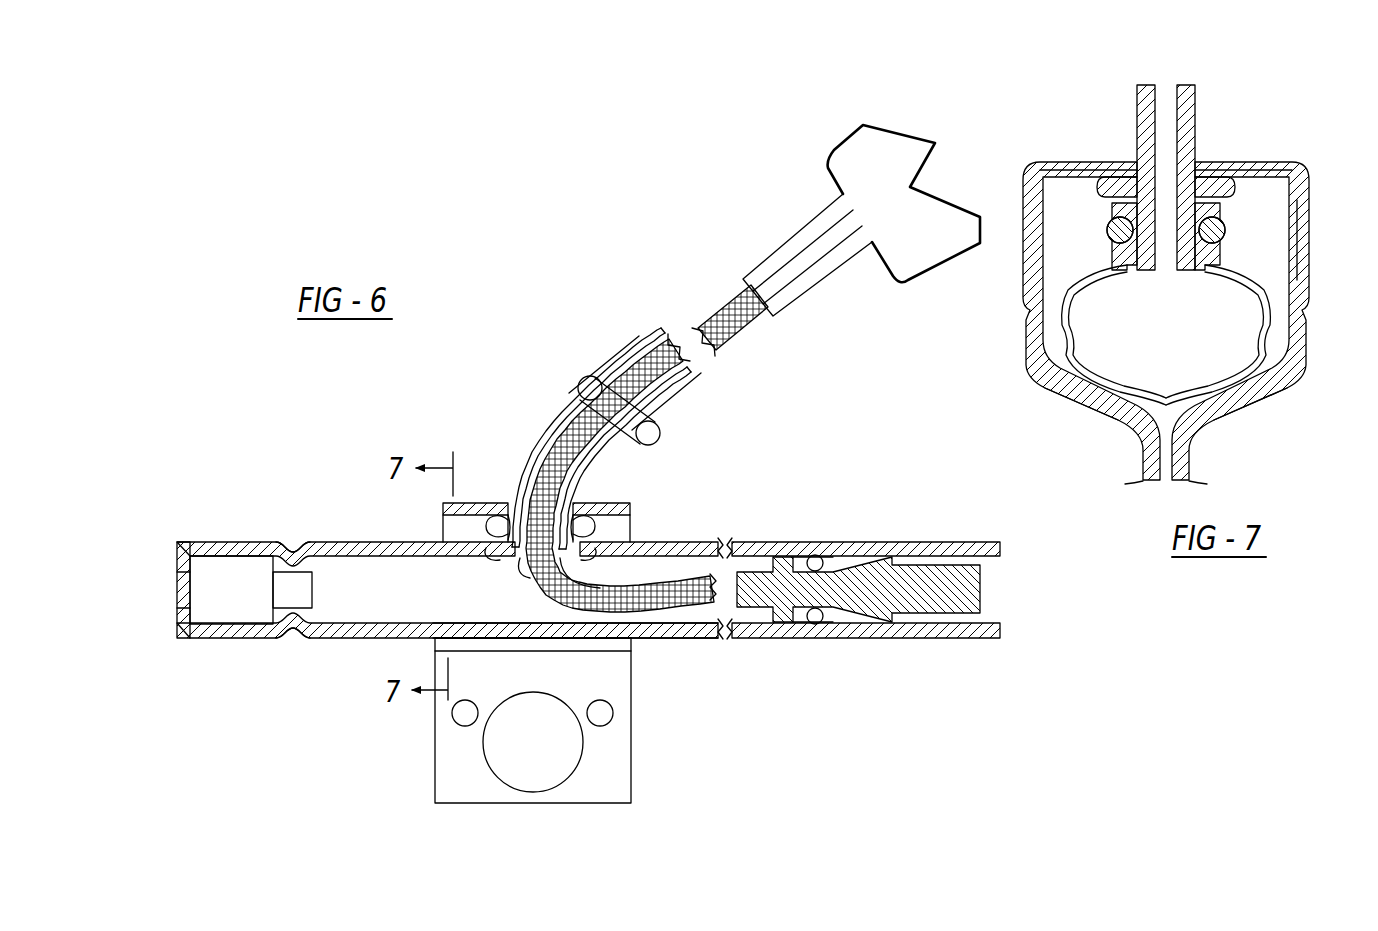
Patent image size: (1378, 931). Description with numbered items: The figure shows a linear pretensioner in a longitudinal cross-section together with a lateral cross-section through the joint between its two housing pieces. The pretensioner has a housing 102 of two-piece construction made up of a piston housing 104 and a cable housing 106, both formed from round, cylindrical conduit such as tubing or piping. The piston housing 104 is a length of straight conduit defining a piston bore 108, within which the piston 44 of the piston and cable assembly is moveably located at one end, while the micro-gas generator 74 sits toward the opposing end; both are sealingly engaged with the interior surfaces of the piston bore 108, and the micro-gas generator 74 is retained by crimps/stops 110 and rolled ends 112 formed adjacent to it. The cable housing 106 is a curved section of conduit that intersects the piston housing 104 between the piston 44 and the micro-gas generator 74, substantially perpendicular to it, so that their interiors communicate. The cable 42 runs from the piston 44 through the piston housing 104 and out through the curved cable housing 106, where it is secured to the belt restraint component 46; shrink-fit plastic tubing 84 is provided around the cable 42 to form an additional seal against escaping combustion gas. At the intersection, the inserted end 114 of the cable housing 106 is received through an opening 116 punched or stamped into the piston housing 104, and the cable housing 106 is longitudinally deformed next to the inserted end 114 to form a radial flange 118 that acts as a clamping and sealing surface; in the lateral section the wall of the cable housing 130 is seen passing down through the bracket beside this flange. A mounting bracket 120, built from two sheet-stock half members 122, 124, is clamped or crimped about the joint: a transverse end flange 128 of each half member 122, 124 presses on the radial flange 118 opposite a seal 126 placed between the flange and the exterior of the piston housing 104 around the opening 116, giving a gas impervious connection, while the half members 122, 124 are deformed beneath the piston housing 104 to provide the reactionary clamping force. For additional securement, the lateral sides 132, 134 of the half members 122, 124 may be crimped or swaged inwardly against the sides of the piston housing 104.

In FIG. 6, the cable 42 is at (712, 323).
In FIG. 6, the piston 44 is at (866, 578).
In FIG. 6, the belt restraint component 46 is at (856, 164).
In FIG. 6, the micro-gas generator 74 is at (222, 575).
In FIG. 6, the shrink-fit plastic tubing 84 is at (612, 370).
In FIG. 6, the housing 102 is at (390, 518).
In FIG. 6, the piston housing 104 is at (360, 640).
In FIG. 6, the cable housing 106 is at (535, 452).
In FIG. 7, the cable housing 106 is at (1137, 116).
In FIG. 6, the piston bore 108 is at (1000, 556).
In FIG. 6, the crimps/stops 110 is at (293, 552).
In FIG. 6, the rolled ends 112 is at (176, 546).
In FIG. 6, the inserted end 114 is at (600, 550).
In FIG. 7, the inserted end 114 is at (1268, 320).
In FIG. 6, the opening 116 is at (586, 584).
In FIG. 7, the opening 116 is at (1152, 276).
In FIG. 6, the radial flange 118 is at (612, 512).
In FIG. 7, the radial flange 118 is at (1216, 186).
In FIG. 6, the mounting bracket 120 is at (655, 753).
In FIG. 6, the half member 122 is at (455, 756).
In FIG. 7, the half member 122 is at (1098, 420).
In FIG. 6, the half member 124 is at (498, 540).
In FIG. 7, the half member 124 is at (1236, 414).
In FIG. 7, the seal 126 is at (1240, 232).
In FIG. 7, the transverse end flange 128 is at (1098, 166).
In FIG. 7, the sheath wall 130 is at (1195, 132).
In FIG. 7, the lateral side 132 is at (1022, 208).
In FIG. 7, the lateral side 134 is at (1302, 248).